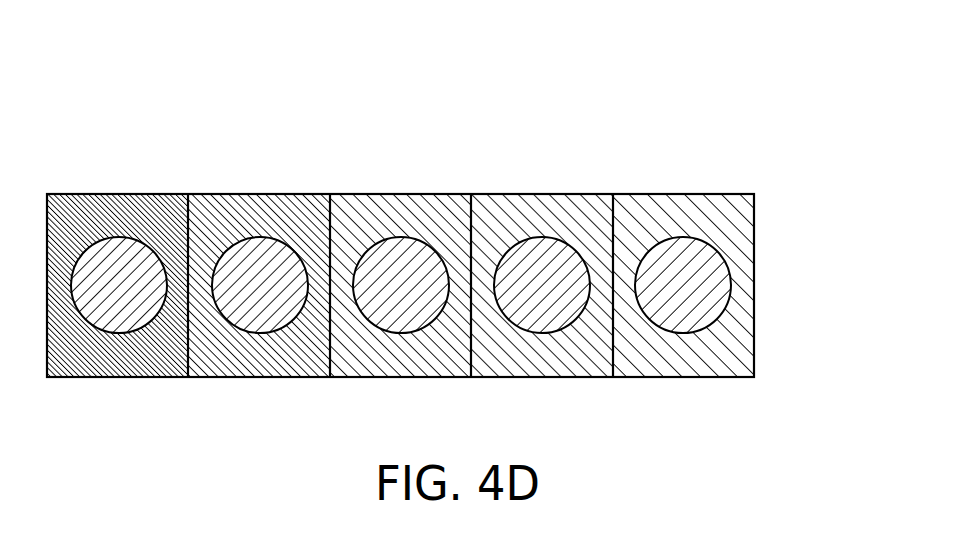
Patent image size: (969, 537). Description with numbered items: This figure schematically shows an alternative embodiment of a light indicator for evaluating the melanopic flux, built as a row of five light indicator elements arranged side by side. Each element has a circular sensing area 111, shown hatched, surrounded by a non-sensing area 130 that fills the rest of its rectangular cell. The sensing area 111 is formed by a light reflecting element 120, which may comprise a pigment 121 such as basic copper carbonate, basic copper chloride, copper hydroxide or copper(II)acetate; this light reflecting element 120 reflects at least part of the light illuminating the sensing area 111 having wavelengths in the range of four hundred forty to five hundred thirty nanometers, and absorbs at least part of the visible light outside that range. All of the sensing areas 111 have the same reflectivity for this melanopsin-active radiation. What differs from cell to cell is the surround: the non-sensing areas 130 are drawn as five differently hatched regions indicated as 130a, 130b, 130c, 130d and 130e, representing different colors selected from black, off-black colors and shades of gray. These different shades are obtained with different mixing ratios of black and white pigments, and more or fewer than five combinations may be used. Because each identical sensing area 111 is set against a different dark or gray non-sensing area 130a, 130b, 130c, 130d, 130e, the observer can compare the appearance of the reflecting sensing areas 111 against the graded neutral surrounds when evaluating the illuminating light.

The non-sensing area 130 is at (667, 217).
The first non-sensing area 130a is at (133, 212).
The second non-sensing area 130b is at (281, 215).
The third non-sensing area 130c is at (596, 297).
The fourth non-sensing area 130d is at (584, 288).
The fifth non-sensing area 130e is at (683, 285).
The sensing area 111 is at (402, 296).
The light reflecting element 120 is at (698, 445).
The pigment 121 is at (702, 440).